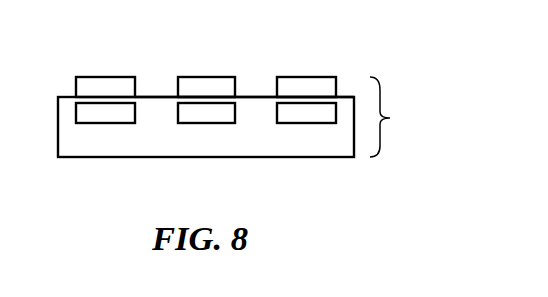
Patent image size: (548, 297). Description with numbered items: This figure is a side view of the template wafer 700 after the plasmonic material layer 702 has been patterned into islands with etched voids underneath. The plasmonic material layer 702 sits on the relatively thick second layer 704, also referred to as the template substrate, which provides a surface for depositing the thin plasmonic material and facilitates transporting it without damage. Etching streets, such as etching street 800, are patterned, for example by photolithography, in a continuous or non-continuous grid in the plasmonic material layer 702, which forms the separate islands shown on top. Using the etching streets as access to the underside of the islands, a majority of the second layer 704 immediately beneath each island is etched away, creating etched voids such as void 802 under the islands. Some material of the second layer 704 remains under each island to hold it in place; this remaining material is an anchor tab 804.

The template wafer 700 is at (254, 114).
The plasmonic material layer 702 is at (207, 55).
The second layer 704 is at (342, 157).
The etching street 800 is at (256, 73).
The void 802 is at (208, 112).
The anchor tab 804 is at (135, 97).